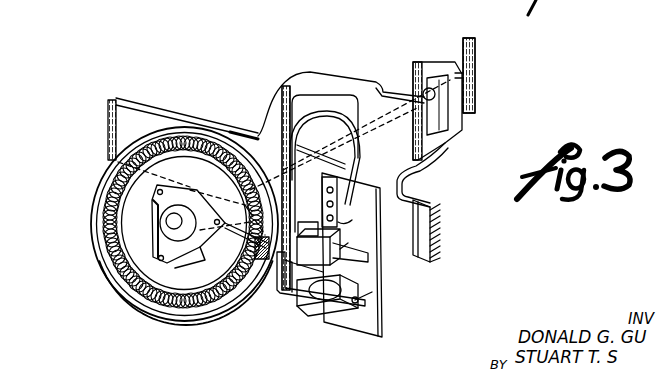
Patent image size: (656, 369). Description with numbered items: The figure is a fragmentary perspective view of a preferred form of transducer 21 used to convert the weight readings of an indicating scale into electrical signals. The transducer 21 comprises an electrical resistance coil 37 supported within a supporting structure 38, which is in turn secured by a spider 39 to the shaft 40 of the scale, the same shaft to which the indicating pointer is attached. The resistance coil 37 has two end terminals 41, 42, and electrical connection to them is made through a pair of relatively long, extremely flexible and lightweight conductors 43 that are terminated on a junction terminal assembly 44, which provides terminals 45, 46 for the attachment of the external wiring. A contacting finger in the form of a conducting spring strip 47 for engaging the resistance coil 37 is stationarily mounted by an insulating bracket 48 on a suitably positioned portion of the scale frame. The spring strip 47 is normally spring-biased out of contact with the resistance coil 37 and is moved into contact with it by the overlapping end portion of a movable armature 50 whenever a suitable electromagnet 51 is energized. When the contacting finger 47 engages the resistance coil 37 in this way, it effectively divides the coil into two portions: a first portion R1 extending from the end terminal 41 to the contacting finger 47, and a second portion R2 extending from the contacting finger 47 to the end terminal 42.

The transducer 21 is at (128, 298).
The electrical resistance coil 37 is at (118, 162).
The supporting structure 38 is at (214, 130).
The spider 39 is at (188, 237).
The shaft 40 is at (428, 88).
The end terminal 41 is at (266, 233).
The end terminal 42 is at (250, 247).
The conductors 43 is at (341, 120).
The junction terminal assembly 44 is at (346, 193).
The terminal 45 is at (310, 232).
The terminal 46 is at (352, 224).
The conducting spring strip 47 is at (255, 290).
The insulating bracket 48 is at (348, 247).
The movable armature 50 is at (336, 314).
The electromagnet 51 is at (332, 312).
The first portion R1 is at (224, 300).
The second portion R2 is at (304, 247).